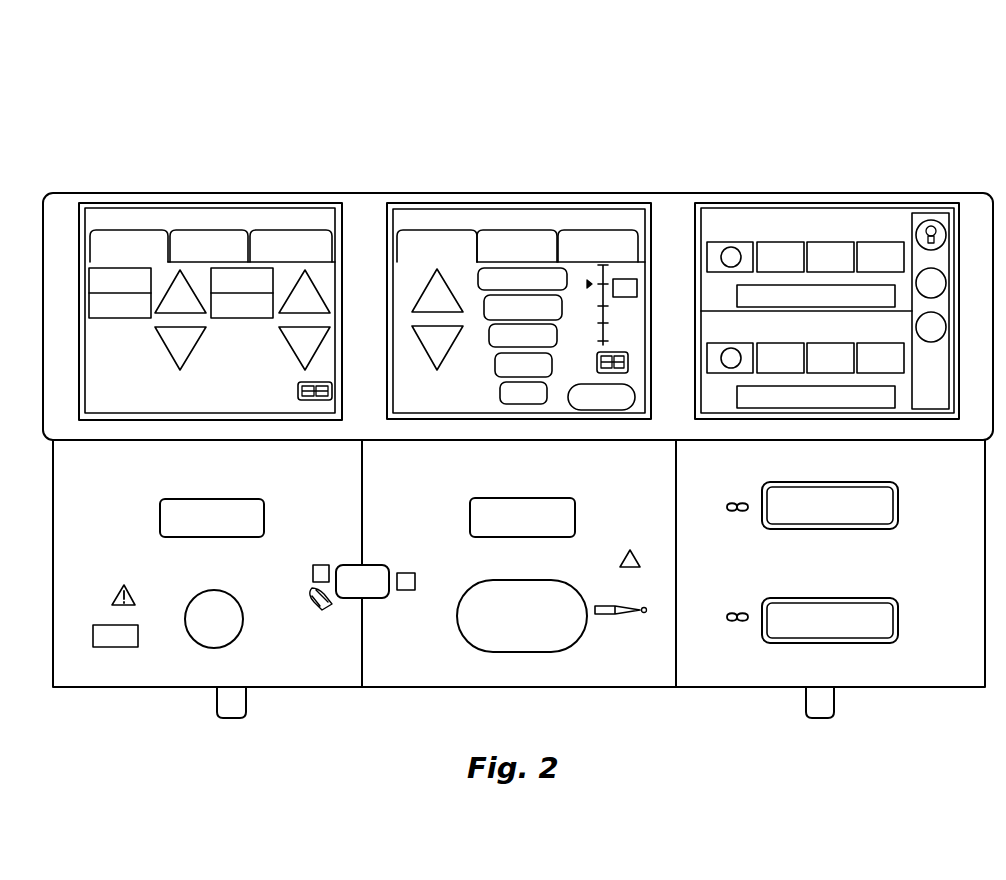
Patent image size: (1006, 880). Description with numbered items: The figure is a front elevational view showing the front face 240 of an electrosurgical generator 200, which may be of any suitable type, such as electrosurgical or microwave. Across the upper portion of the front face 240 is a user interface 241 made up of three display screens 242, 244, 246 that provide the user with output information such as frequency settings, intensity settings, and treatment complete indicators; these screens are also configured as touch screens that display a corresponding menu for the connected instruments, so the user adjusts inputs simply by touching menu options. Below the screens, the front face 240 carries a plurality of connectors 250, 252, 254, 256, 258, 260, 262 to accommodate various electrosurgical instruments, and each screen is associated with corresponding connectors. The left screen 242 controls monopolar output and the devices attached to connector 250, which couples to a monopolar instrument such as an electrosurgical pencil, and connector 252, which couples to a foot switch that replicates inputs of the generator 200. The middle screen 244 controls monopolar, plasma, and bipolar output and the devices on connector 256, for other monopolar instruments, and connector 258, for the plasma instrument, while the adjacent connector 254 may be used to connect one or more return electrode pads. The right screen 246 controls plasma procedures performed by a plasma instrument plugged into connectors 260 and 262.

The generator 200 is at (861, 147).
The front face 240 is at (388, 192).
The user interface 241 is at (543, 173).
The display screen 242 is at (277, 202).
The display screen 244 is at (512, 202).
The display screen 246 is at (780, 202).
The connector 250 is at (161, 500).
The connector 252 is at (243, 622).
The connector 254 is at (353, 565).
The connector 256 is at (548, 498).
The connector 258 is at (587, 627).
The connector 260 is at (898, 500).
The connector 262 is at (898, 613).